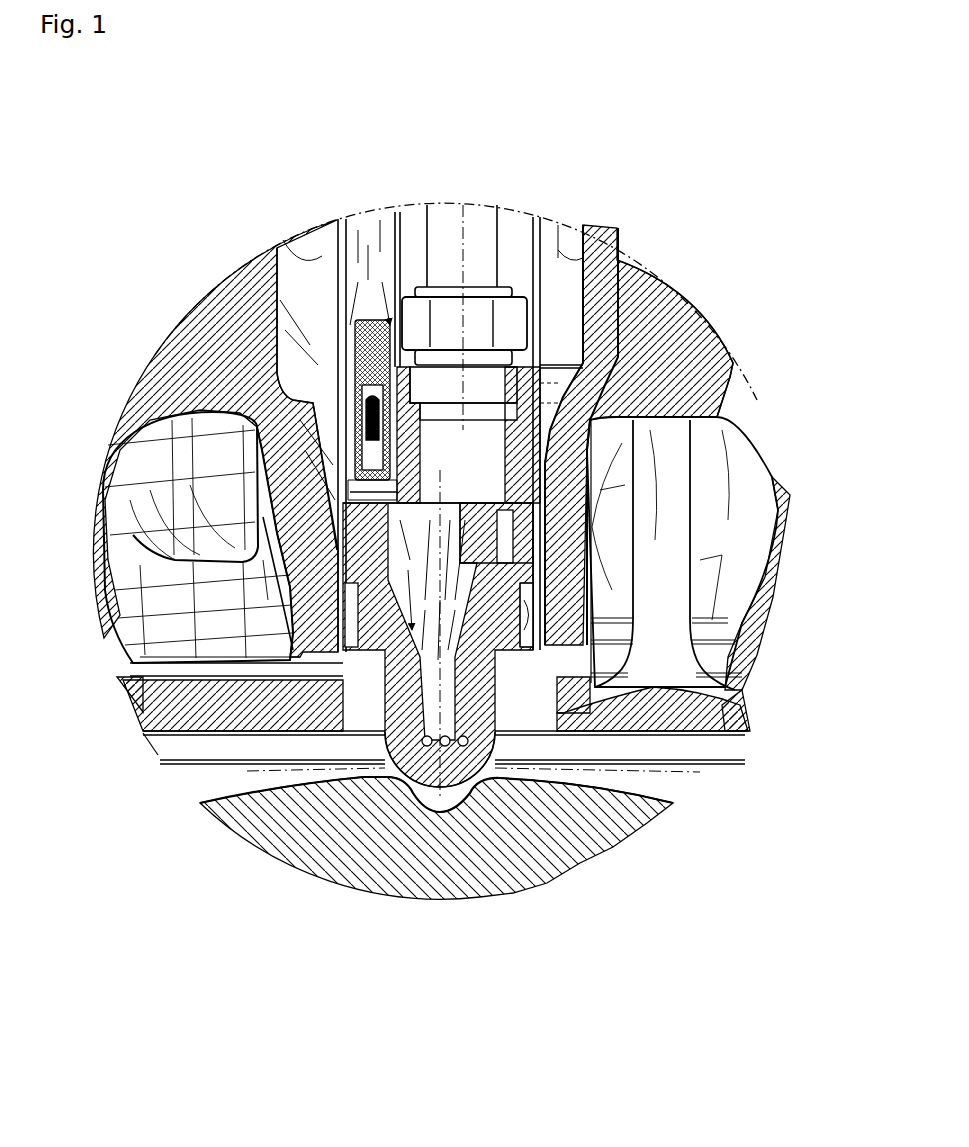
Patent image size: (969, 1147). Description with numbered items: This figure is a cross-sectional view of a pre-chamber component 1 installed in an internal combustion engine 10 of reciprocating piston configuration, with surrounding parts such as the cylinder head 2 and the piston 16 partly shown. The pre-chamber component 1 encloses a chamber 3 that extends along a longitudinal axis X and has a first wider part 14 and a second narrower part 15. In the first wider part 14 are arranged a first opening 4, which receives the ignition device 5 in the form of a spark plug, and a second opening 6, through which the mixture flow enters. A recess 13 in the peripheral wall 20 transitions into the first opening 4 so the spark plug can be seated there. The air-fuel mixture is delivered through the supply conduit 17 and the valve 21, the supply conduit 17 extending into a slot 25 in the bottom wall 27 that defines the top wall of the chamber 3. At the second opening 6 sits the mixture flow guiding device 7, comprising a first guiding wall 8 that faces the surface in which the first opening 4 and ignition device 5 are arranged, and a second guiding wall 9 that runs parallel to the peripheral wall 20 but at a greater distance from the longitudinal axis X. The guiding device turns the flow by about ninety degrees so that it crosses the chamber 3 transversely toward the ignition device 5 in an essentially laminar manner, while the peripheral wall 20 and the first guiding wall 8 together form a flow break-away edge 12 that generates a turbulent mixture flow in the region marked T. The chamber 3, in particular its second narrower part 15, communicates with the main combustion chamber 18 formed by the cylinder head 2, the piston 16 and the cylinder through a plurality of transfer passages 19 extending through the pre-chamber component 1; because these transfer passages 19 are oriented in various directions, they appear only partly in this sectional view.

The pre-chamber component 1 is at (130, 696).
The cylinder head 2 is at (478, 447).
The chamber 3 is at (690, 743).
The first opening 4 is at (590, 541).
The ignition device 5 is at (548, 378).
The second opening 6 is at (200, 453).
The mixture flow guiding device 7 is at (140, 592).
The first guiding wall 8 is at (335, 497).
The second guiding wall 9 is at (340, 520).
The internal combustion engine 10 is at (573, 128).
The flow break-away edge 12 is at (142, 607).
The recess 13 is at (520, 563).
The first wider part 14 is at (165, 676).
The second narrower part 15 is at (480, 780).
The piston 16 is at (282, 843).
The supply conduit 17 is at (362, 268).
The main combustion chamber 18 is at (200, 778).
The transfer passages 19 is at (455, 765).
The peripheral wall 20 is at (150, 640).
The valve 21 is at (480, 392).
The slot 25 is at (365, 497).
The bottom wall 27 is at (390, 505).
The turbulent flow area T is at (165, 658).
The longitudinal axis X is at (680, 787).